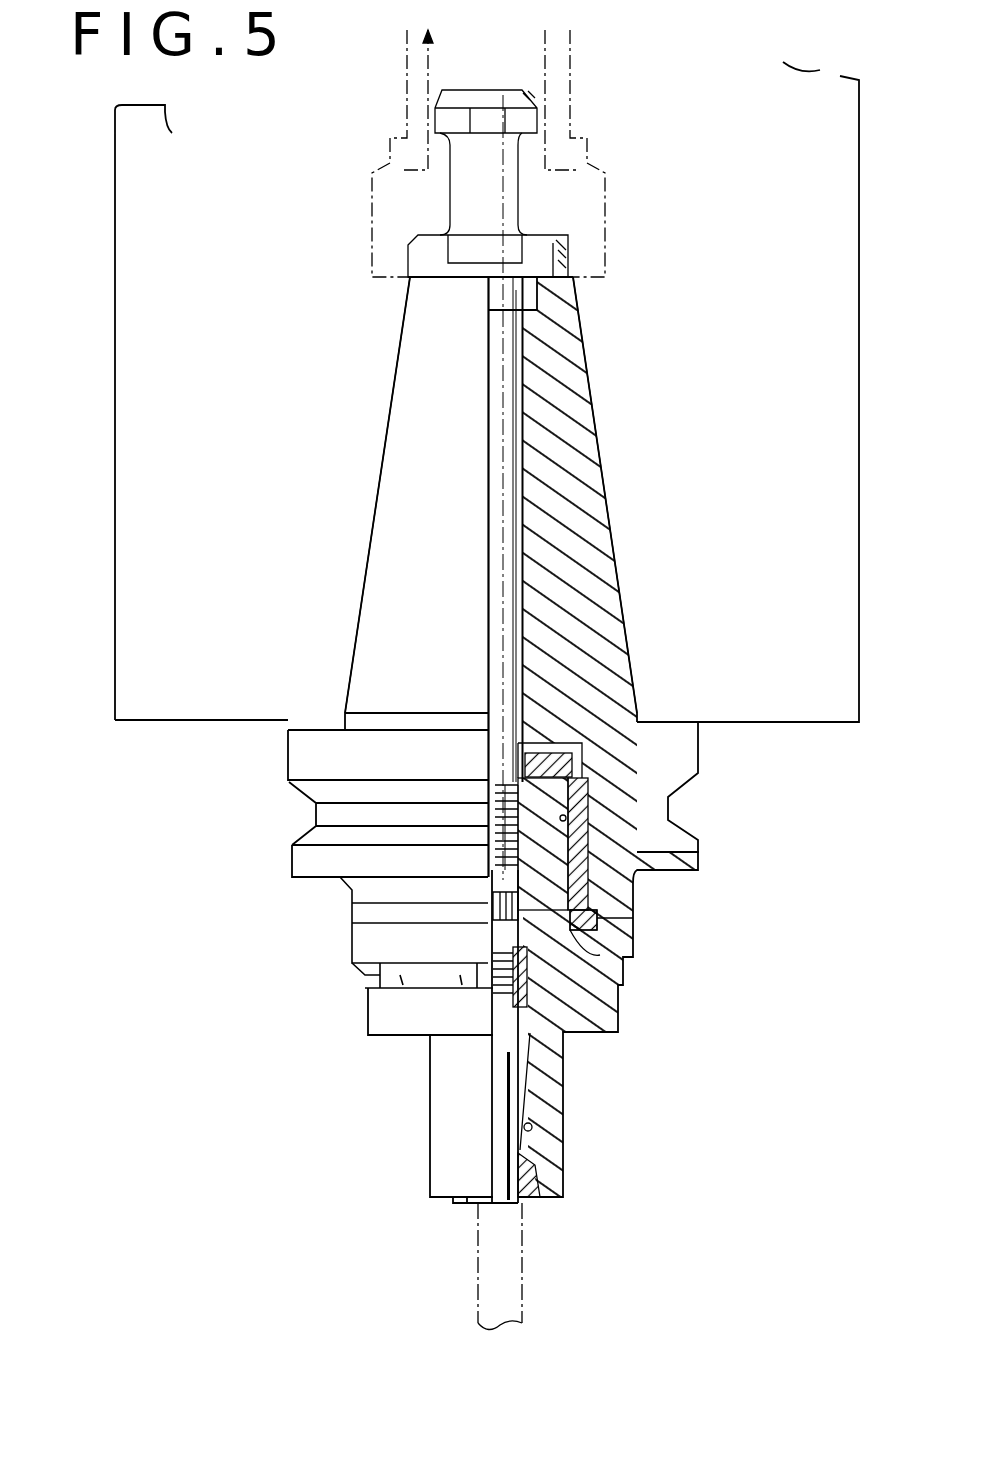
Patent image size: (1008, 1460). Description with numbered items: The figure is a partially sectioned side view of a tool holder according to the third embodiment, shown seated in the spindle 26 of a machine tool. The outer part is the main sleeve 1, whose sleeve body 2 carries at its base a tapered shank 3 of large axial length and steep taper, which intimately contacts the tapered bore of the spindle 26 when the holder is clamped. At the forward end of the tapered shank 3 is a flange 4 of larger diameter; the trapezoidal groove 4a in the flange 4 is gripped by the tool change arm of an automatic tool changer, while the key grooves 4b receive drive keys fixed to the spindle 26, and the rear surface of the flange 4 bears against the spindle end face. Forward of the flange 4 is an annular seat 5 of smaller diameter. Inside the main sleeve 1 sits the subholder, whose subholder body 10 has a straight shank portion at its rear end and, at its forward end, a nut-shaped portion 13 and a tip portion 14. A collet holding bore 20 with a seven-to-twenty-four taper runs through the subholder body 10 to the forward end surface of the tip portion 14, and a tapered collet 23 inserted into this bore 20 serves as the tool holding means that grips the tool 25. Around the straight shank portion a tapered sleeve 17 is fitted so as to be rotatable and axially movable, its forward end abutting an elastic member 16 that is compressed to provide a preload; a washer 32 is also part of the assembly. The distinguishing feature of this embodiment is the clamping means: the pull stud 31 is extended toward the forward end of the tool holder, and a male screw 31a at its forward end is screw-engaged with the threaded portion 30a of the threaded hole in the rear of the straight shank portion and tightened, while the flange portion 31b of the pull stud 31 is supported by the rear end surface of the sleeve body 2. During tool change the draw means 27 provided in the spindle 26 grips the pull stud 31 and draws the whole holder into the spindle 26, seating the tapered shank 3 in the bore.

The main sleeve 1 is at (490, 737).
The sleeve body 2 is at (398, 430).
The tapered shank 3 is at (375, 480).
The flange 4 is at (287, 762).
The trapezoidal groove 4a is at (315, 812).
The key grooves 4b is at (655, 757).
The annular seat 5 is at (297, 860).
The subholder body 10 is at (440, 1078).
The nut-shaped portion 13 is at (365, 972).
The tip portion 14 is at (440, 1130).
The elastic member 16 is at (632, 957).
The tapered sleeve 17 is at (635, 885).
The collet holding bore 20 is at (530, 1133).
The tapered collet 23 is at (540, 1172).
The tool 25 is at (505, 1265).
The spindle 26 is at (174, 135).
The draw means 27 is at (410, 95).
The threaded portion 30a is at (500, 837).
The pull stud 31 is at (520, 412).
The male screw 31a is at (527, 735).
The flange portion 31b is at (557, 262).
The washer 32 is at (380, 903).